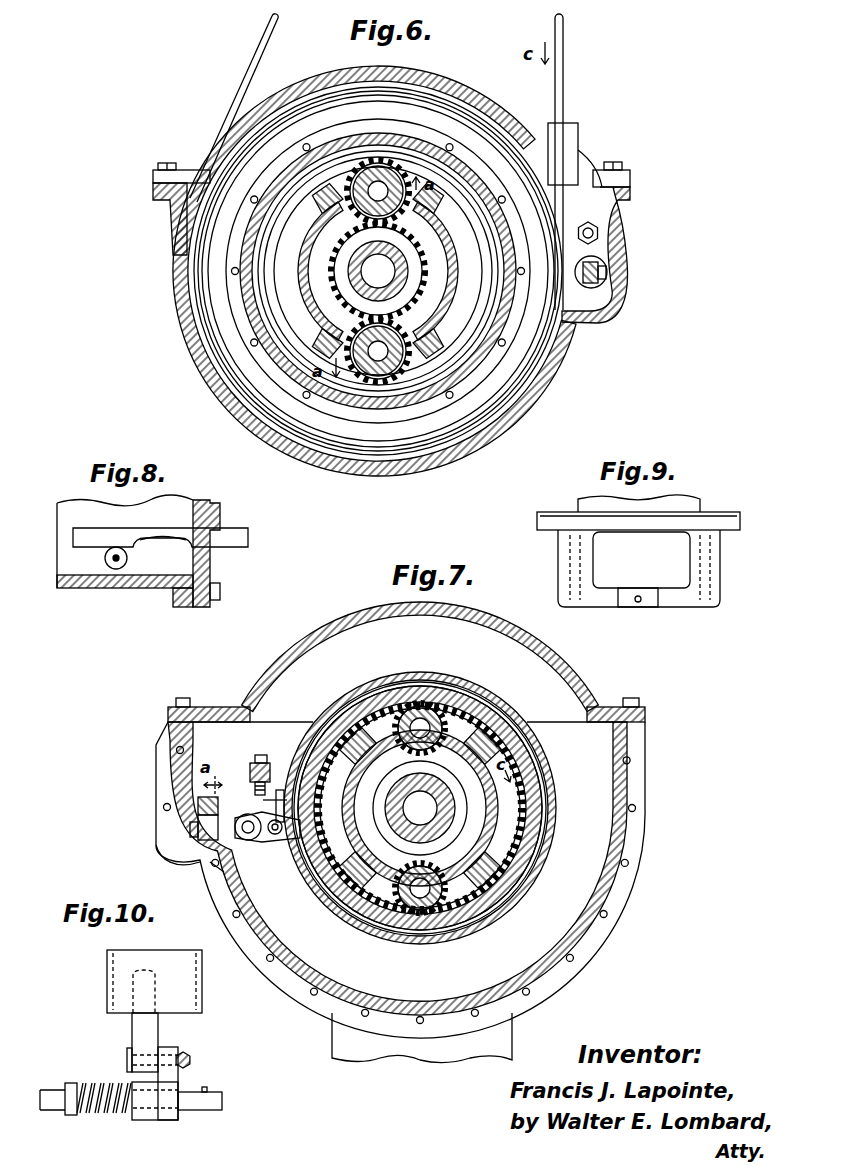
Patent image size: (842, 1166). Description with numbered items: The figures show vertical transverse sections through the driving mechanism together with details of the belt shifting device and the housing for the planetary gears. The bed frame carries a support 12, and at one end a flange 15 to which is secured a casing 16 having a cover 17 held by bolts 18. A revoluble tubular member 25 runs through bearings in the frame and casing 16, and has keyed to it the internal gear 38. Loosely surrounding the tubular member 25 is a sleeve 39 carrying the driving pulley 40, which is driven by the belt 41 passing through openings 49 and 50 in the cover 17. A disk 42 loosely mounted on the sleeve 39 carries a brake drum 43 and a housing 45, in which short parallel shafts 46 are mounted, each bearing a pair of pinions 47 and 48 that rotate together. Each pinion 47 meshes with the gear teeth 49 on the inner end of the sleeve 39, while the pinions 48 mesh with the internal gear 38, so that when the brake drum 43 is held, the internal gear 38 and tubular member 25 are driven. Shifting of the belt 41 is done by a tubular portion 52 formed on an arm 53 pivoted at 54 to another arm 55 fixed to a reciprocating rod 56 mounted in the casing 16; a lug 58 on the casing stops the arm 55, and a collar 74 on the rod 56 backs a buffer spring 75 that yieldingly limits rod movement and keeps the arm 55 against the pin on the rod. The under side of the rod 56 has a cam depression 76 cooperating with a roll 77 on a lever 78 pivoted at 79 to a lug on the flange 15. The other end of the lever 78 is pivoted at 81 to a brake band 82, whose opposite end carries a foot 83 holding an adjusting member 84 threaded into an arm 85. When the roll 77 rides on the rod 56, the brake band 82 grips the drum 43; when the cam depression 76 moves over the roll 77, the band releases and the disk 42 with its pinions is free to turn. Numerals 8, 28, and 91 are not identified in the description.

In FIG. 7, the adjustment indicator 8 is at (230, 850).
In FIG. 7, the support 12 is at (513, 1036).
In FIG. 8, the flange 15 is at (214, 505).
In FIG. 6, the casing 16 is at (486, 447).
In FIG. 8, the casing 16 is at (155, 592).
In FIG. 7, the casing 16 is at (590, 943).
In FIG. 6, the cover 17 is at (430, 84).
In FIG. 7, the cover 17 is at (310, 640).
In FIG. 6, the bolts 18 is at (170, 166).
In FIG. 6, the tubular member 25 is at (378, 271).
In FIG. 7, the tubular member 25 is at (420, 808).
In FIG. 6, the internal gear 28 is at (342, 296).
In FIG. 7, the internal gear 28 is at (456, 806).
In FIG. 7, the internal gear 38 is at (490, 736).
In FIG. 6, the sleeve 39 is at (340, 268).
In FIG. 6, the driving pulley 40 is at (392, 476).
In FIG. 6, the belt 41 is at (566, 74).
In FIG. 6, the disk 42 is at (445, 280).
In FIG. 9, the disk 42 is at (712, 516).
In FIG. 6, the brake drum 43 is at (518, 271).
In FIG. 7, the brake drum 43 is at (550, 838).
In FIG. 6, the housing 45 is at (320, 240).
In FIG. 9, the housing 45 is at (722, 572).
In FIG. 6, the short parallel shafts 46 is at (385, 178).
In FIG. 7, the short parallel shafts 46 is at (420, 712).
In FIG. 6, the pinion 47 is at (420, 180).
In FIG. 7, the pinion 48 is at (444, 708).
In FIG. 6, the gear teeth 49 is at (266, 100).
In FIG. 6, the opening 50 is at (524, 132).
In FIG. 6, the tubular portion 52 is at (570, 138).
In FIG. 10, the tubular portion 52 is at (204, 990).
In FIG. 6, the arm 53 is at (585, 172).
In FIG. 10, the arm 53 is at (132, 1027).
In FIG. 6, the pivot 54 is at (605, 226).
In FIG. 10, the pivot 54 is at (192, 1060).
In FIG. 6, the arm 55 is at (604, 250).
In FIG. 10, the arm 55 is at (178, 1080).
In FIG. 6, the reciprocating rod 56 is at (628, 260).
In FIG. 8, the reciprocating rod 56 is at (232, 538).
In FIG. 7, the reciprocating rod 56 is at (197, 806).
In FIG. 10, the reciprocating rod 56 is at (222, 1100).
In FIG. 6, the lug 58 is at (620, 273).
In FIG. 10, the collar 74 is at (70, 1116).
In FIG. 10, the buffer spring 75 is at (92, 1086).
In FIG. 8, the cam depression 76 is at (160, 538).
In FIG. 8, the roll 77 is at (114, 570).
In FIG. 7, the roll 77 is at (170, 842).
In FIG. 8, the lever 78 is at (128, 558).
In FIG. 7, the lever 78 is at (214, 870).
In FIG. 7, the pivot 79 is at (250, 840).
In FIG. 7, the pivot 81 is at (275, 836).
In FIG. 7, the brake band 82 is at (375, 928).
In FIG. 7, the foot 83 is at (282, 790).
In FIG. 7, the adjusting member 84 is at (259, 754).
In FIG. 7, the arm 85 is at (252, 770).
In FIG. 6, the hand lever 91 is at (260, 40).